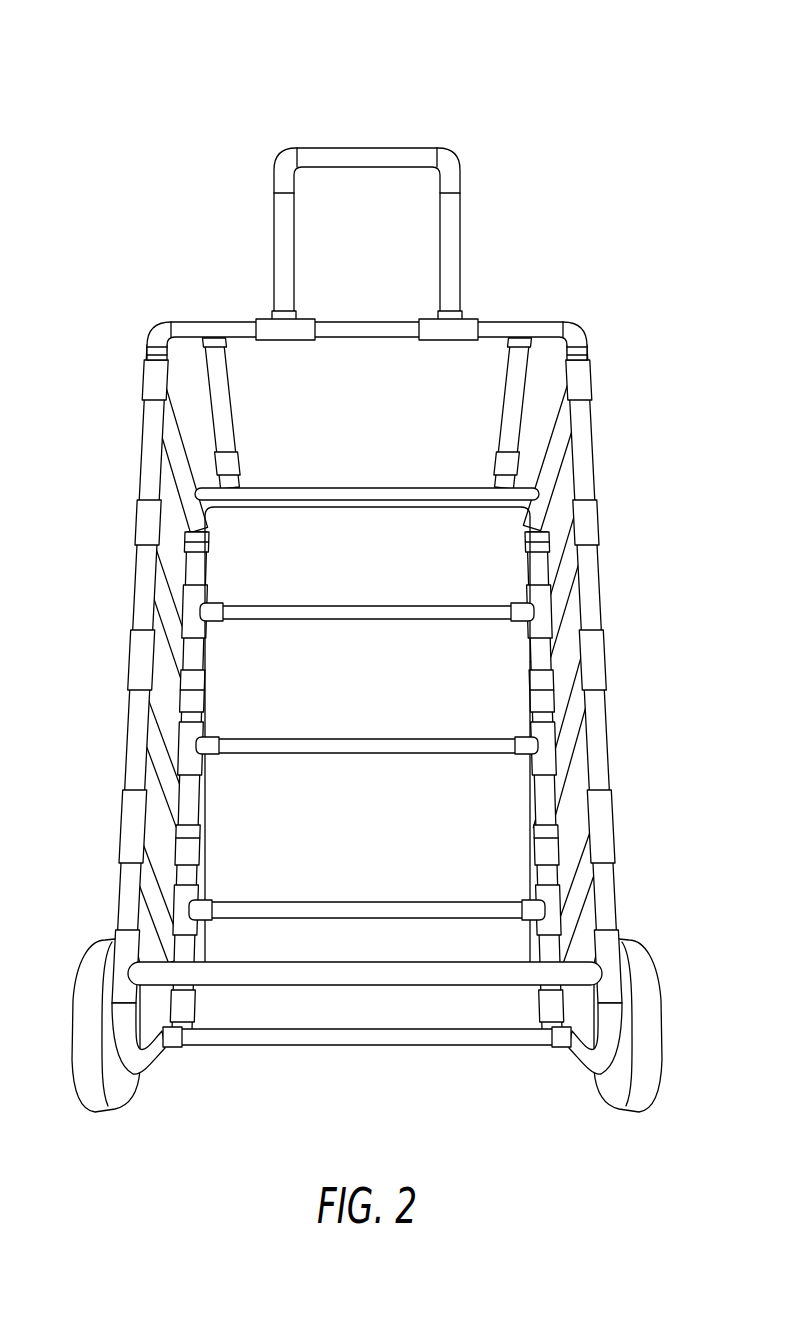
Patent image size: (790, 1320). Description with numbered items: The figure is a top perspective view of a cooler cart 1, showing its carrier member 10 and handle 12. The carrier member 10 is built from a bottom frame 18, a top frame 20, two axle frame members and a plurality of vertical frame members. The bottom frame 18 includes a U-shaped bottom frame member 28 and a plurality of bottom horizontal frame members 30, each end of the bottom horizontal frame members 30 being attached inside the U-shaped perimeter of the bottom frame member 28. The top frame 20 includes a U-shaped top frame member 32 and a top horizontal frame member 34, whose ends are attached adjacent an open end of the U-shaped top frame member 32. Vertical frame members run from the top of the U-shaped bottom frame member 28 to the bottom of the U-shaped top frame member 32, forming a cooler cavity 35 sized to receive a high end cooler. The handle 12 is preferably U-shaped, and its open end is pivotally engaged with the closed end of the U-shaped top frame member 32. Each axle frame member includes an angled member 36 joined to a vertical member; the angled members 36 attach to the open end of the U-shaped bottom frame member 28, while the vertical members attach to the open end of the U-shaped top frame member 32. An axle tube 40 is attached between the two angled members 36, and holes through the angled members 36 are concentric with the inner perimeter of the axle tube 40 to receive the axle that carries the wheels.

The cooler cart 1 is at (270, 123).
The carrier member 10 is at (608, 415).
The handle 12 is at (393, 148).
The bottom frame 18 is at (353, 468).
The top frame 20 is at (503, 302).
The U-shaped bottom frame member 28 is at (297, 498).
The bottom horizontal frame members 30 is at (312, 612).
The U-shaped top frame member 32 is at (580, 340).
The top horizontal frame member 34 is at (297, 975).
The cooler cavity 35 is at (556, 525).
The angled member 36 is at (150, 1058).
The axle tube 40 is at (407, 1037).